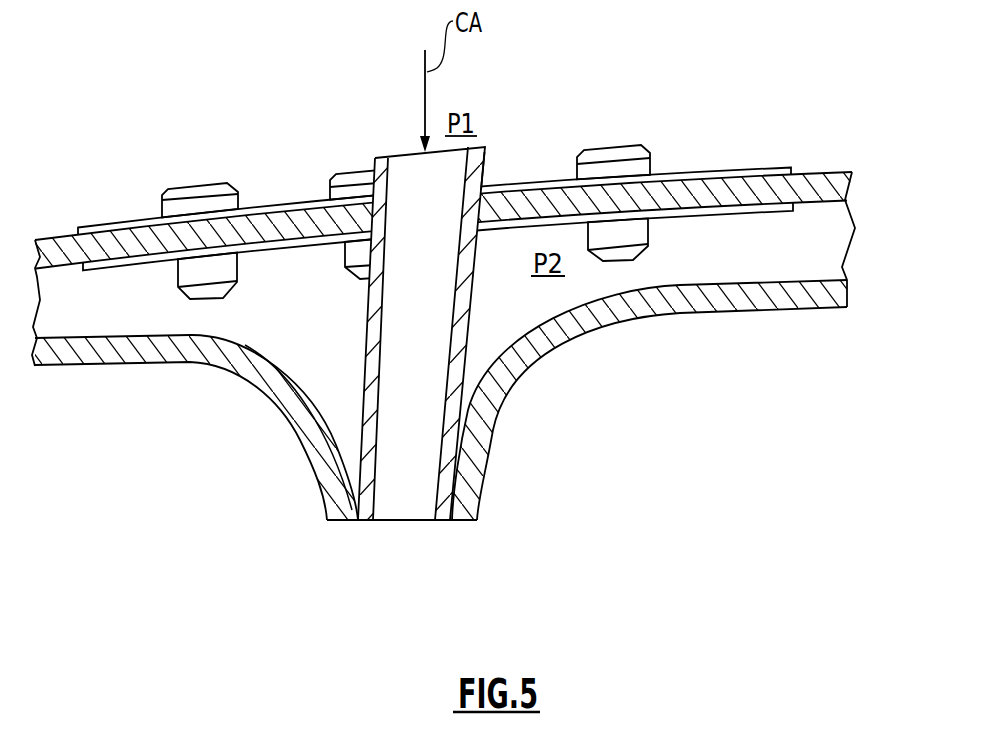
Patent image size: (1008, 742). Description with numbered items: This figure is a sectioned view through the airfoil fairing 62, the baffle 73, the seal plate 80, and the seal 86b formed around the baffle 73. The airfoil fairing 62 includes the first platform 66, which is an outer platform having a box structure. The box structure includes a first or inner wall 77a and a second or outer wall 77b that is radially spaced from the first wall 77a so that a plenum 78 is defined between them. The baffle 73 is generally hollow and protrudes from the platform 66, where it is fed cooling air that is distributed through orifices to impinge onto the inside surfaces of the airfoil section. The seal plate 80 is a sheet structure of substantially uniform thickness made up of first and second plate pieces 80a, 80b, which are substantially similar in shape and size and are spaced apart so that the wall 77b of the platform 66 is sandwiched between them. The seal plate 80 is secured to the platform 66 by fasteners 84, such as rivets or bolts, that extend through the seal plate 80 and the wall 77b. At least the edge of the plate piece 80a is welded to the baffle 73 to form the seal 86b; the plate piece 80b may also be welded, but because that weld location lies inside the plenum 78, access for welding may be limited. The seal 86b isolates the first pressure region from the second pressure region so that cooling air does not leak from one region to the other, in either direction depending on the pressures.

The airfoil fairing 62 is at (500, 490).
The first platform 66 is at (461, 320).
The baffle 73 is at (463, 367).
The first wall 77a is at (441, 400).
The second wall 77b is at (809, 187).
The plenum 78 is at (805, 250).
The seal plate 80 is at (440, 176).
The first plate piece 80a is at (739, 170).
The second plate piece 80b is at (754, 212).
The fastener 84 is at (603, 150).
The seal 86b is at (488, 194).